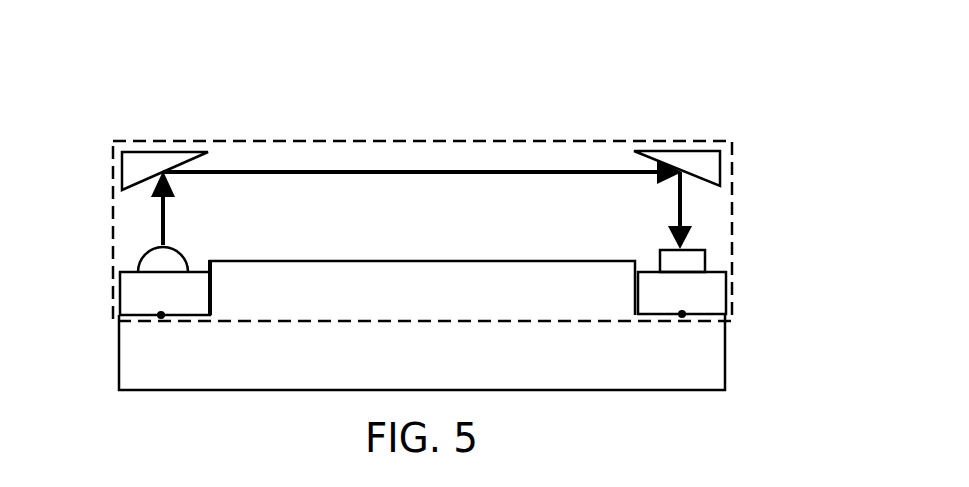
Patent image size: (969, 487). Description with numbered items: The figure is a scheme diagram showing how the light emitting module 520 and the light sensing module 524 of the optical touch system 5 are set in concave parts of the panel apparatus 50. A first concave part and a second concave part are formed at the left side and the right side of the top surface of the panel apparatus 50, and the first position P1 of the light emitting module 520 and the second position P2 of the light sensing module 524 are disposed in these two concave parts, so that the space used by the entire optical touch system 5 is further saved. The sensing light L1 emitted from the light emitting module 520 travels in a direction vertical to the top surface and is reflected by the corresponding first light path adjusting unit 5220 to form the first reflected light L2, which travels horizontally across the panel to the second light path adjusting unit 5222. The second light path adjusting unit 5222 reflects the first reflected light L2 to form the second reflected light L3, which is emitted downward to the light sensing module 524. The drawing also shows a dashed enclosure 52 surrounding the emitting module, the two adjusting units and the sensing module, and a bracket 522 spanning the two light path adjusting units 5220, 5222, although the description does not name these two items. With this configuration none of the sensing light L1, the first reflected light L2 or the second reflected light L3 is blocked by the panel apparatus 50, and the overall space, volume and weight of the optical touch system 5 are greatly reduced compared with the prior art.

The optical touch system 5 is at (648, 55).
The panel apparatus 50 is at (118, 350).
The optical module 52 is at (733, 197).
The light emitting module 520 is at (117, 287).
The reflective element 522 is at (421, 118).
The first light path adjusting unit 5220 is at (198, 152).
The second light path adjusting unit 5222 is at (631, 137).
The light sensing module 524 is at (731, 290).
The sensing light L1 is at (151, 208).
The first reflected light L2 is at (422, 187).
The second reflected light L3 is at (667, 210).
The first position P1 is at (161, 315).
The second position P2 is at (682, 314).